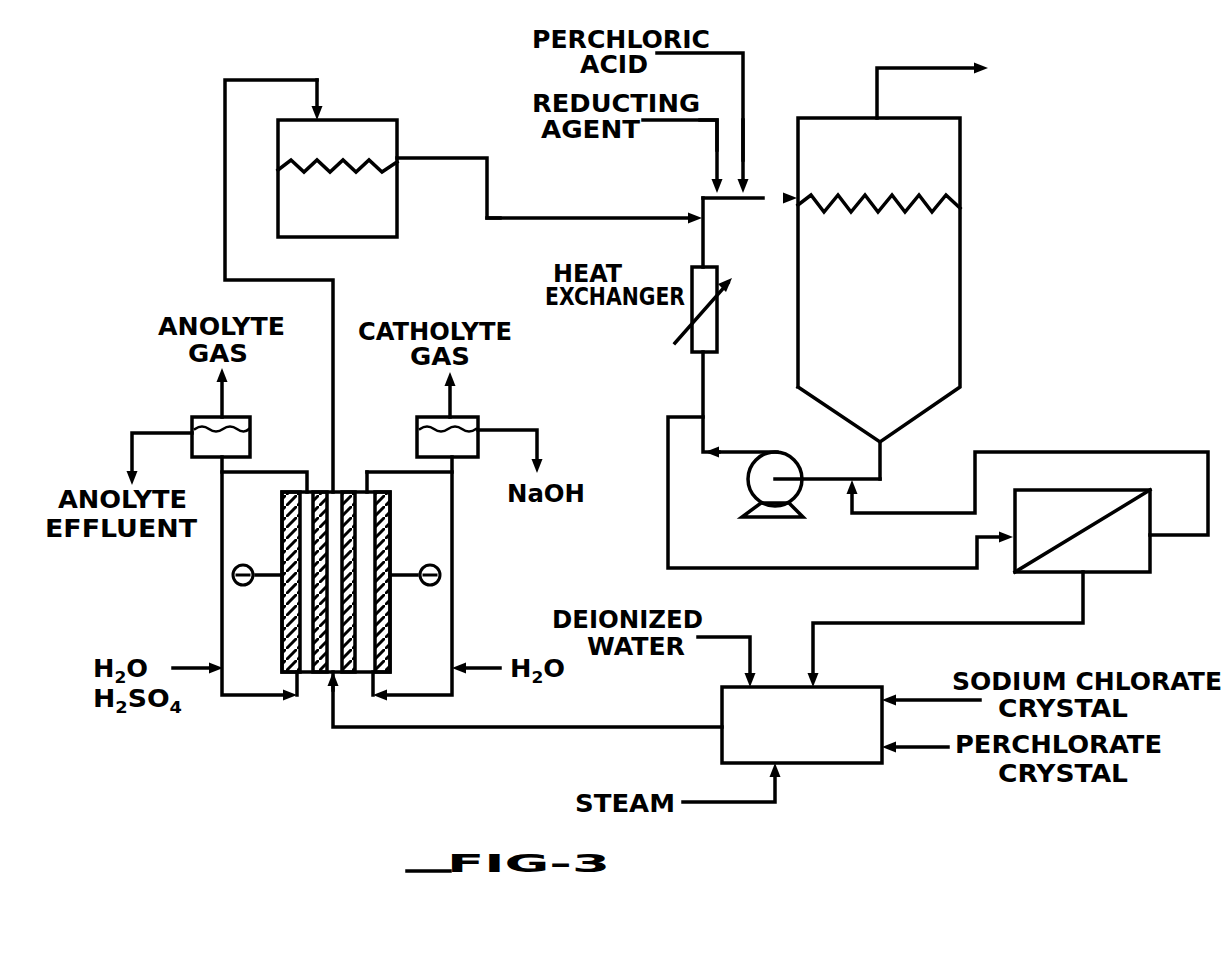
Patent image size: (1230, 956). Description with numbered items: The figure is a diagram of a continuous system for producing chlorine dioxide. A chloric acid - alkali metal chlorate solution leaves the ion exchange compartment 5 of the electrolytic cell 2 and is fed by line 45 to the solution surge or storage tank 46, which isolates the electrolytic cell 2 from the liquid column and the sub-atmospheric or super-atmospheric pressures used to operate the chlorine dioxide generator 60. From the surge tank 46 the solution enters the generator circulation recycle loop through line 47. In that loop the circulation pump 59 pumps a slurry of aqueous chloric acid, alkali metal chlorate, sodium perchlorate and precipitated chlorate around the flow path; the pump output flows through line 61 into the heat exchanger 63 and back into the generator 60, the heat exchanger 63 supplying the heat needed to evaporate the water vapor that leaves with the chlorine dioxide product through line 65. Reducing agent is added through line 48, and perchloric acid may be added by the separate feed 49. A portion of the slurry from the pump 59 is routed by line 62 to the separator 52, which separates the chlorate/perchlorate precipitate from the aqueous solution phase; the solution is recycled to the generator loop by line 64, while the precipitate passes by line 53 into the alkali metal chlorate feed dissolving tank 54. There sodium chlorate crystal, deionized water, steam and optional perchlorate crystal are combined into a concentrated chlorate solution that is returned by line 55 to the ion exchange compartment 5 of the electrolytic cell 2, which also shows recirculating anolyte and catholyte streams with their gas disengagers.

The electrolytic cell 2 is at (390, 633).
The ion exchange compartment 5 is at (330, 690).
The line 45 is at (225, 195).
The solution surge or storage tank 46 is at (360, 120).
The line 47 is at (572, 218).
The line 48 is at (677, 120).
The separate feed 49 is at (743, 143).
The separator 52 is at (1120, 572).
The line 53 is at (917, 623).
The alkali metal chlorate feed dissolving tank 54 is at (862, 763).
The line 55 is at (483, 727).
The circulation pump 59 is at (750, 490).
The chlorine dioxide generator 60 is at (960, 270).
The line 61 is at (707, 395).
The line 62 is at (778, 572).
The heat exchanger 63 is at (718, 318).
The line 64 is at (1095, 452).
The line 65 is at (942, 68).